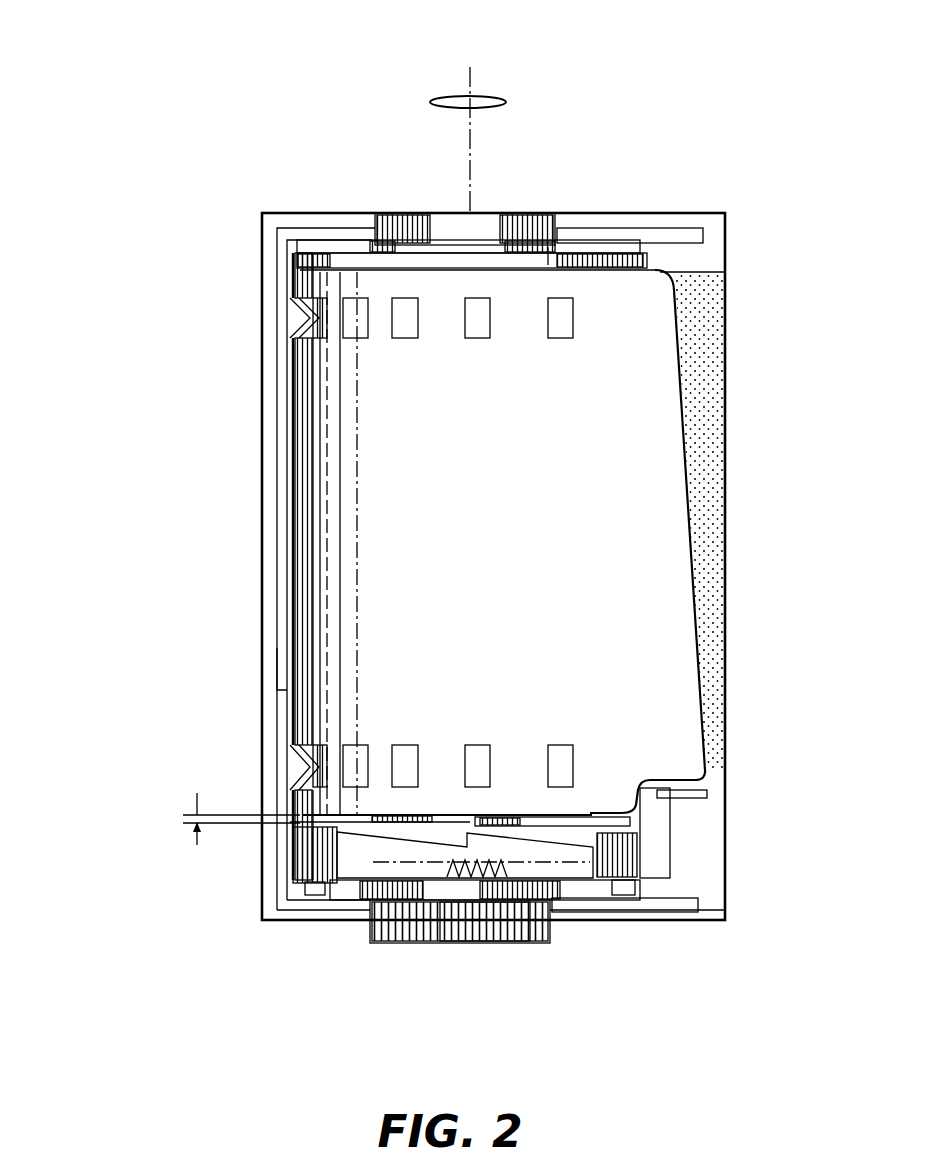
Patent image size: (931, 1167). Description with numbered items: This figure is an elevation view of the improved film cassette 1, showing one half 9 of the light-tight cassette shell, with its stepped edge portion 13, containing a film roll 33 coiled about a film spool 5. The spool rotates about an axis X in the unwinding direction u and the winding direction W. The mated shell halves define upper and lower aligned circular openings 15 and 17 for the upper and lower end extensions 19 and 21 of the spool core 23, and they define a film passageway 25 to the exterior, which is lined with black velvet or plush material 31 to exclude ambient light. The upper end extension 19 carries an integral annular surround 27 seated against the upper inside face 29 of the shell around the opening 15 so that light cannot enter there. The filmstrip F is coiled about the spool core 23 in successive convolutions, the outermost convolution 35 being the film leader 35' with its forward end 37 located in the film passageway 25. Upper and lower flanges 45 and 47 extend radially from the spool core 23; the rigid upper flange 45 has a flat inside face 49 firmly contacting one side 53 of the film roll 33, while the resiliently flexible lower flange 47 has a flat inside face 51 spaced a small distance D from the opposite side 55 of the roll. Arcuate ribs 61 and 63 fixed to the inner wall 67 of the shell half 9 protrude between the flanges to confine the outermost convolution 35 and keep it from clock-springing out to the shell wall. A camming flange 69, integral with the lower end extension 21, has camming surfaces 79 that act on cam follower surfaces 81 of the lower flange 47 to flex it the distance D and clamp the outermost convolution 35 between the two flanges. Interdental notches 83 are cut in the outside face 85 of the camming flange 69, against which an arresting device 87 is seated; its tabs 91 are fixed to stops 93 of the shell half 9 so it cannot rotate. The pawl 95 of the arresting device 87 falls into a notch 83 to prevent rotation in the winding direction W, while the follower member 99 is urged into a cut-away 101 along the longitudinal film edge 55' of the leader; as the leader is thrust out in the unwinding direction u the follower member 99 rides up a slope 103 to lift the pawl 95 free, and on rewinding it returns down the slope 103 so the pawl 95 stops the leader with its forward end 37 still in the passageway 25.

The film cassette 1 is at (250, 372).
The film spool 5 is at (300, 580).
The shell half 9 is at (262, 692).
The stepped edge portion 13 is at (672, 232).
The upper circular opening 15 is at (548, 225).
The lower circular opening 17 is at (520, 943).
The upper end extension 19 is at (517, 217).
The lower end extension 21 is at (385, 945).
The spool core 23 is at (430, 815).
The film passageway 25 is at (708, 475).
The annular surround 27 is at (480, 243).
The upper inside face 29 is at (328, 262).
The plush material 31 is at (724, 655).
The film roll 33 is at (300, 613).
The outermost convolution 35 is at (226, 458).
The film leader 35' is at (264, 529).
The forward end 37 is at (688, 458).
The upper flange 45 is at (300, 257).
The lower flange 47 is at (300, 835).
The inside face of upper flange 49 is at (412, 272).
The inside face of lower flange 51 is at (465, 855).
The side of film roll 53 is at (452, 265).
The side of film roll 55 is at (441, 771).
The longitudinal film edge 55' is at (552, 769).
The arcuate rib 61 is at (292, 318).
The arcuate rib 63 is at (290, 750).
The inner wall 67 is at (300, 480).
The camming flange 69 is at (300, 853).
The camming surfaces 79 is at (567, 845).
The cam follower surfaces 81 is at (492, 838).
The interdental notches 83 is at (452, 898).
The outside face 85 is at (480, 880).
The arresting device 87 is at (337, 900).
The tabs 91 is at (297, 888).
The stops 93 is at (302, 900).
The pawl 95 is at (660, 903).
The follower member 99 is at (706, 794).
The cut-away 101 is at (668, 788).
The slope 103 is at (626, 806).
The distance D is at (241, 800).
The filmstrip F is at (347, 406).
The film winding direction W is at (435, 98).
The axis X is at (463, 92).
The film unwinding direction u is at (492, 96).